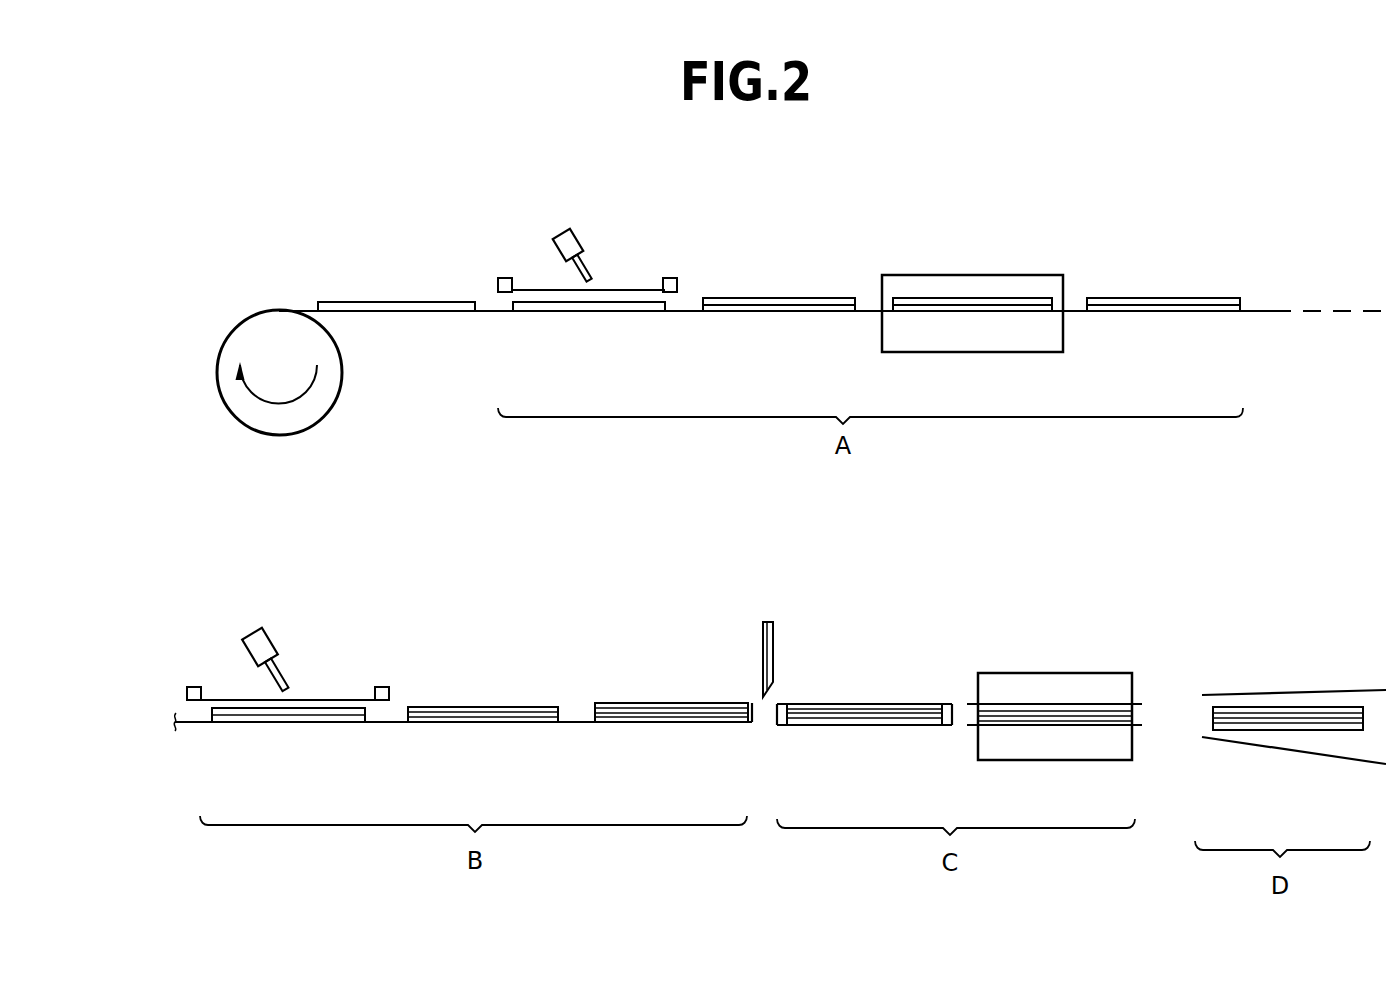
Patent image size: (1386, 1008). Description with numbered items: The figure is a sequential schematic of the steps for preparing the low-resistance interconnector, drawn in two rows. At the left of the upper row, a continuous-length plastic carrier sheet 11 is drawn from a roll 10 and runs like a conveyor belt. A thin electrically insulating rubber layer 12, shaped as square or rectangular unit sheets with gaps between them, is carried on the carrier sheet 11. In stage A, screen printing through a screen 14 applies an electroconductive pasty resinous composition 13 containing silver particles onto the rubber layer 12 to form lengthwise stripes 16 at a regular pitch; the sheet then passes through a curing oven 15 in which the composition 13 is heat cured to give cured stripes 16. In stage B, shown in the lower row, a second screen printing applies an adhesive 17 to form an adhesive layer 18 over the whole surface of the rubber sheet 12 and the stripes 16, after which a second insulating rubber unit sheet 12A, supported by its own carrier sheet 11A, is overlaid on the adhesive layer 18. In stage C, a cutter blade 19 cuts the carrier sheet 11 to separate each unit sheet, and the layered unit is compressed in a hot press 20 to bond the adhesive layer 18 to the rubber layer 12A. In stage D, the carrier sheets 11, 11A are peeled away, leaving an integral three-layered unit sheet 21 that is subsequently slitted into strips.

The roll 10 is at (235, 414).
The carrier sheet 11 is at (487, 313).
The insulating rubber layer 12 is at (376, 301).
The electroconductive pasty resinous composition 13 is at (566, 242).
The screen 14 is at (627, 289).
The curing oven 15 is at (966, 274).
The stripes 16 is at (800, 297).
The adhesive 17 is at (251, 643).
The adhesive layer 18 is at (482, 706).
The cutter blade 19 is at (773, 660).
The hot press 20 is at (1048, 672).
The integral three-layered unit sheet 21 is at (1279, 731).
The carrier sheet 11A is at (635, 702).
The second unit sheet of insulating rubber 12A is at (594, 717).